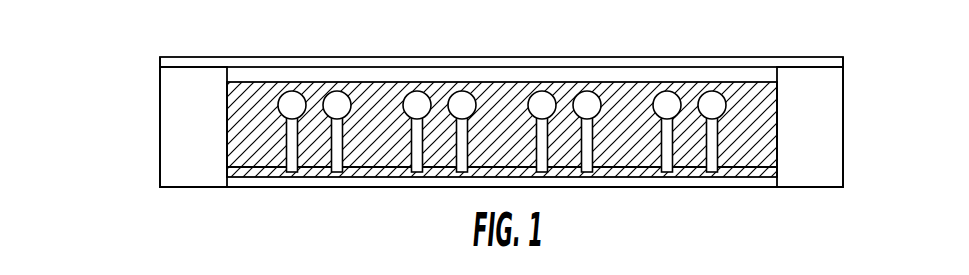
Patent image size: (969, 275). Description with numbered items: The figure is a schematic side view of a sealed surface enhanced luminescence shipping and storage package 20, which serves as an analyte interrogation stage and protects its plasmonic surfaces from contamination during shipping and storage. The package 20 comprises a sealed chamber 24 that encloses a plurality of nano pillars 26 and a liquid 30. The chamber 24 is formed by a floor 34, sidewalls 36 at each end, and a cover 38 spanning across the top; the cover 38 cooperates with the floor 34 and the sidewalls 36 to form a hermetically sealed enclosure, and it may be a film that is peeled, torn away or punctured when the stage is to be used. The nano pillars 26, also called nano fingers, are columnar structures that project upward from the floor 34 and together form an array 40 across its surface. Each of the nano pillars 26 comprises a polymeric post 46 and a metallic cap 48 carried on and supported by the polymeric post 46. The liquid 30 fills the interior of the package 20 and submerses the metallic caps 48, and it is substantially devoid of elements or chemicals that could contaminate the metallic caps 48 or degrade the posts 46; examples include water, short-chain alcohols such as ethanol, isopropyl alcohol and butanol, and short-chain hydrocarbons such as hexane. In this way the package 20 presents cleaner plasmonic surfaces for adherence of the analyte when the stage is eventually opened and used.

The shipping and storage package 20 is at (102, 68).
The sealed chamber 24 is at (158, 102).
The nano pillars 26 is at (601, 91).
The liquid 30 is at (370, 87).
The floor 34 is at (257, 177).
The sidewalls 36 is at (158, 150).
The cover 38 is at (438, 58).
The array 40 is at (307, 83).
The polymeric post 46 is at (718, 133).
The metallic cap 48 is at (712, 90).